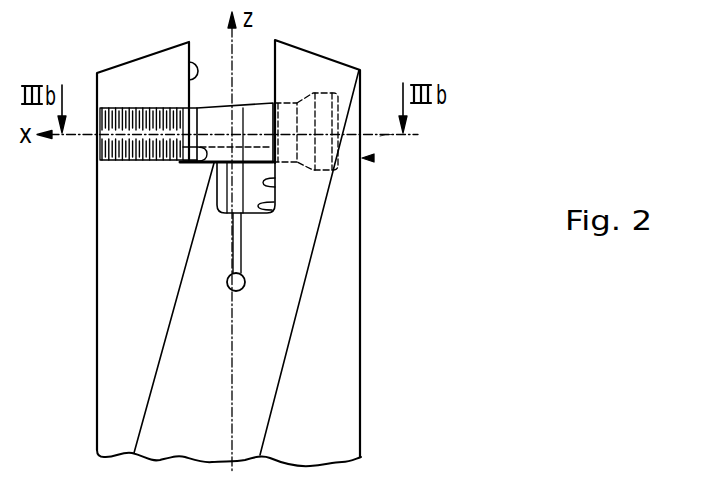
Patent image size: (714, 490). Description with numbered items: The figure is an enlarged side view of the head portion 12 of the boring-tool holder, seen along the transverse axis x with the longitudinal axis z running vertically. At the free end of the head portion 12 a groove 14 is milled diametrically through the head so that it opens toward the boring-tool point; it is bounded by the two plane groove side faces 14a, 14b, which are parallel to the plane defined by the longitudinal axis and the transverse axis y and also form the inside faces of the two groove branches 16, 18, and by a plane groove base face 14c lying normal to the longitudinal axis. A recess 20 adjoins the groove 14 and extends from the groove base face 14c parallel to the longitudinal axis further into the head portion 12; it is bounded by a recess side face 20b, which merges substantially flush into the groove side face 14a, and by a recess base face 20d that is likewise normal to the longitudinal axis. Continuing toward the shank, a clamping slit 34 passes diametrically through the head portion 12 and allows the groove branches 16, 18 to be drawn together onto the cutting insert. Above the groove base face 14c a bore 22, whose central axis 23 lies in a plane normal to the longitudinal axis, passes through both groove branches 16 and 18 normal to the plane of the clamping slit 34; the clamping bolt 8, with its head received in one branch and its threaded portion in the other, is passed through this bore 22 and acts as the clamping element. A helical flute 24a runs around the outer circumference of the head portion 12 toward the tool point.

The clamping bolt 8 is at (337, 77).
The head portion 12 is at (359, 376).
The groove 14 is at (213, 58).
The groove side face 14a is at (259, 116).
The groove side face 14b is at (134, 78).
The groove base face 14c is at (165, 162).
The groove branch 16 is at (276, 87).
The groove branch 18 is at (188, 63).
The recess 20 is at (222, 201).
The recess side face 20b is at (277, 184).
The recess base face 20d is at (278, 207).
The bore 22 is at (372, 158).
The central axis 23 is at (380, 136).
The flute 24a is at (272, 284).
The clamping slit 34 is at (232, 262).